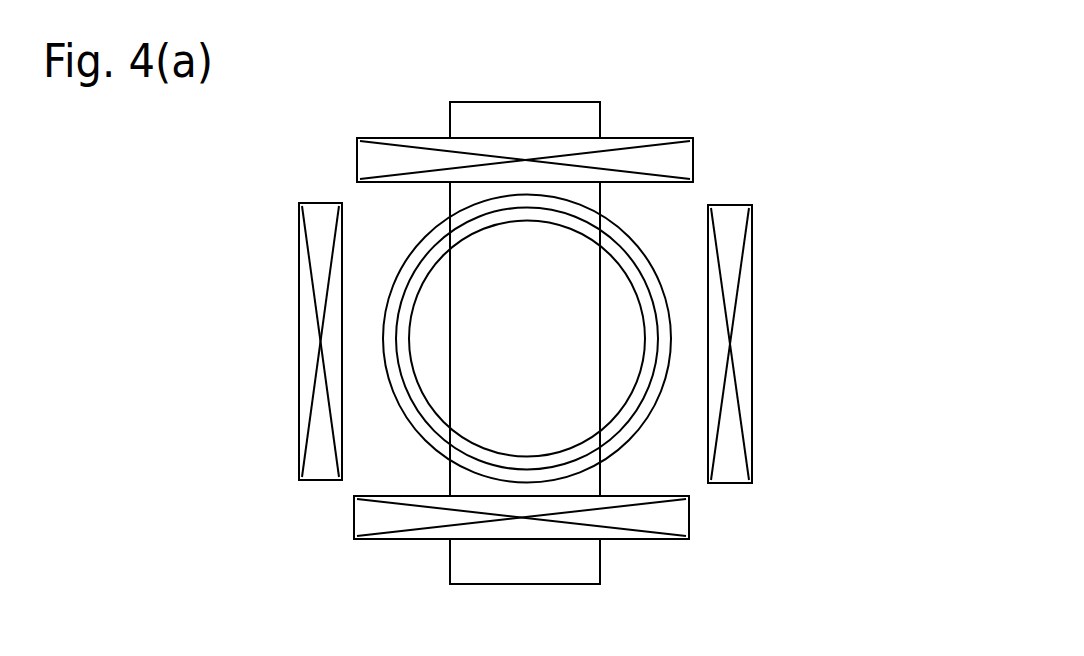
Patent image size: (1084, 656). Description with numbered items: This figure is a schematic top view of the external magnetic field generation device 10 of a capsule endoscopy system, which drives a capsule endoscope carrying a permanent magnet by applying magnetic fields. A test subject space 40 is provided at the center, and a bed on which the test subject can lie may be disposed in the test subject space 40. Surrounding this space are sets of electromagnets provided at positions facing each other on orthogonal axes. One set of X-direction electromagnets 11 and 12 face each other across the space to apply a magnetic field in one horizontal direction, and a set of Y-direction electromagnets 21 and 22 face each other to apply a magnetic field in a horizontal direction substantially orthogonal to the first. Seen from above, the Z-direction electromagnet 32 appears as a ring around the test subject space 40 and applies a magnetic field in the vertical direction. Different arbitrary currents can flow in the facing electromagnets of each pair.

The external magnetic field generation device 10 is at (547, 30).
The X-direction electromagnet 11 is at (682, 530).
The X-direction electromagnet 12 is at (657, 138).
The Y-direction electromagnet 21 is at (298, 343).
The Y-direction electromagnet 22 is at (752, 318).
The Z-direction electromagnet 32 is at (420, 443).
The test subject space 40 is at (537, 353).